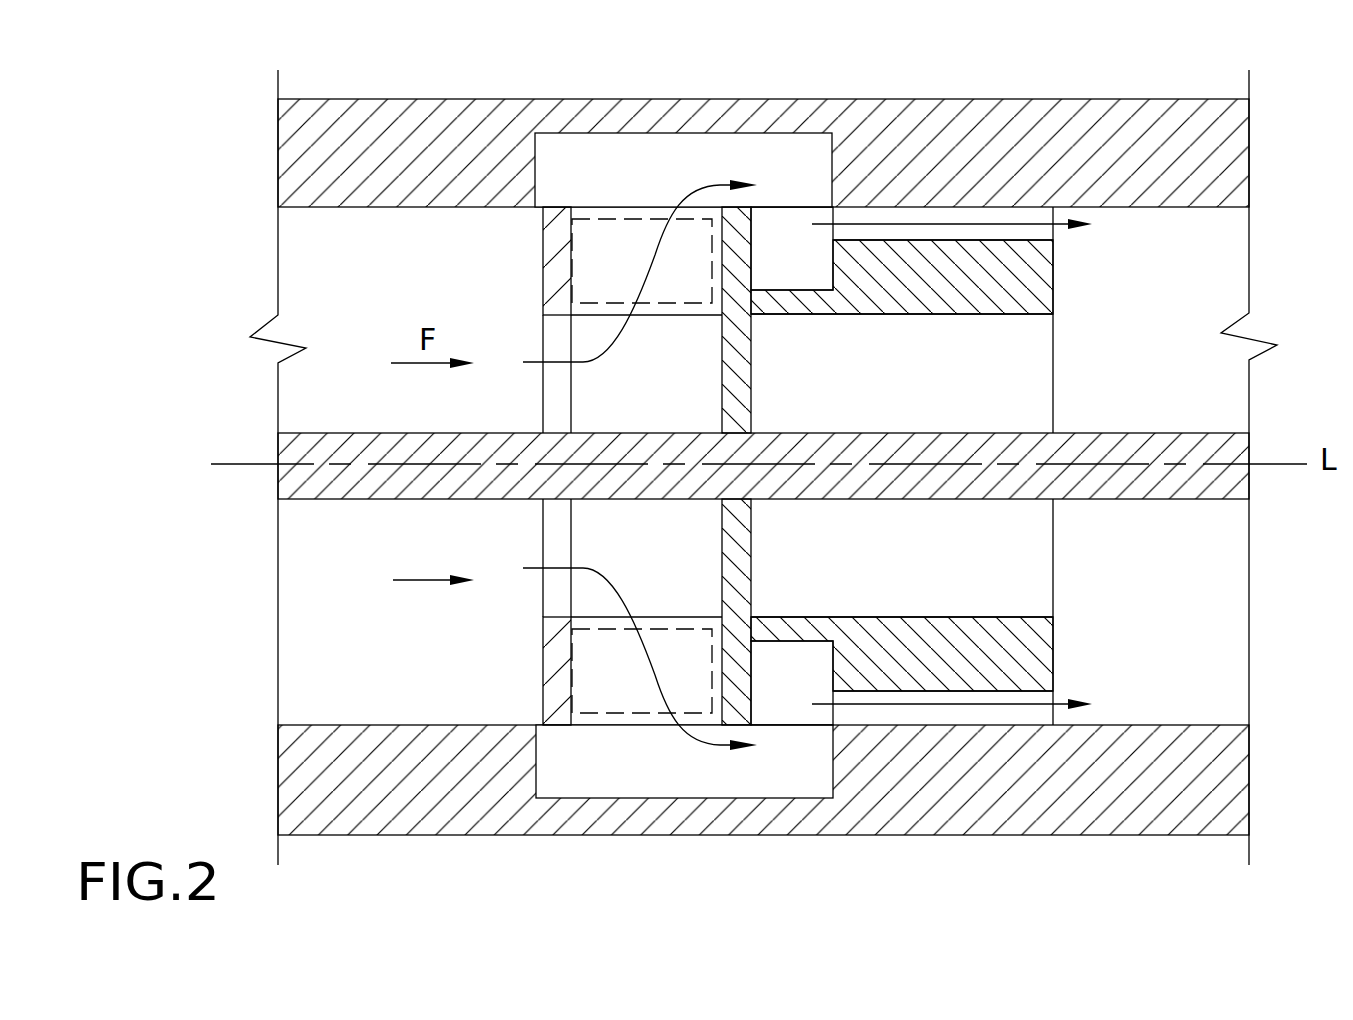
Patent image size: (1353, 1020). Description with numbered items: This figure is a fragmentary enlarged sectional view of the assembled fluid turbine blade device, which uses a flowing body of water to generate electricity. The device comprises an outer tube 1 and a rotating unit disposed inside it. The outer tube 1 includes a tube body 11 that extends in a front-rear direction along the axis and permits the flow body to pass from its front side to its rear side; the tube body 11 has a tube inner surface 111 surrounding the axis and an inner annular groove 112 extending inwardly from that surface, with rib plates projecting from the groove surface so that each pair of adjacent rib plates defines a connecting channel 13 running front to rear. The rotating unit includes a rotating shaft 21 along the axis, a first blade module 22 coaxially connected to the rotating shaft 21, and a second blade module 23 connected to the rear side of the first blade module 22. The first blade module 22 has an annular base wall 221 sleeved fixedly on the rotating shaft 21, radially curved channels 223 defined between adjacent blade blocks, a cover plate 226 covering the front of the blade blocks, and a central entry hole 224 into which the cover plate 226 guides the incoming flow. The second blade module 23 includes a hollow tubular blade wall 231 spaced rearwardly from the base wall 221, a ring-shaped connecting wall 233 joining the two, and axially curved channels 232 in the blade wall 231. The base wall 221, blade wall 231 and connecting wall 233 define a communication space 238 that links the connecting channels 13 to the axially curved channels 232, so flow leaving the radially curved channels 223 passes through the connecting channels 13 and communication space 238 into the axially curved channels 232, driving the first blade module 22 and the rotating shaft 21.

The outer tube 1 is at (362, 101).
The tube body 11 is at (413, 137).
The tube inner surface 111 is at (947, 212).
The inner annular groove 112 is at (792, 132).
The connecting channel 13 is at (699, 773).
The rotating shaft 21 is at (1232, 441).
The first blade module 22 is at (579, 455).
The annular base wall 221 is at (740, 228).
The radially curved channel 223 is at (610, 242).
The entry hole 224 is at (543, 601).
The cover plate 226 is at (553, 252).
The second blade module 23 is at (1039, 471).
The blade wall 231 is at (1040, 267).
The axially curved channel 232 is at (972, 713).
The ring-shaped connecting wall 233 is at (793, 305).
The communication space 238 is at (771, 694).